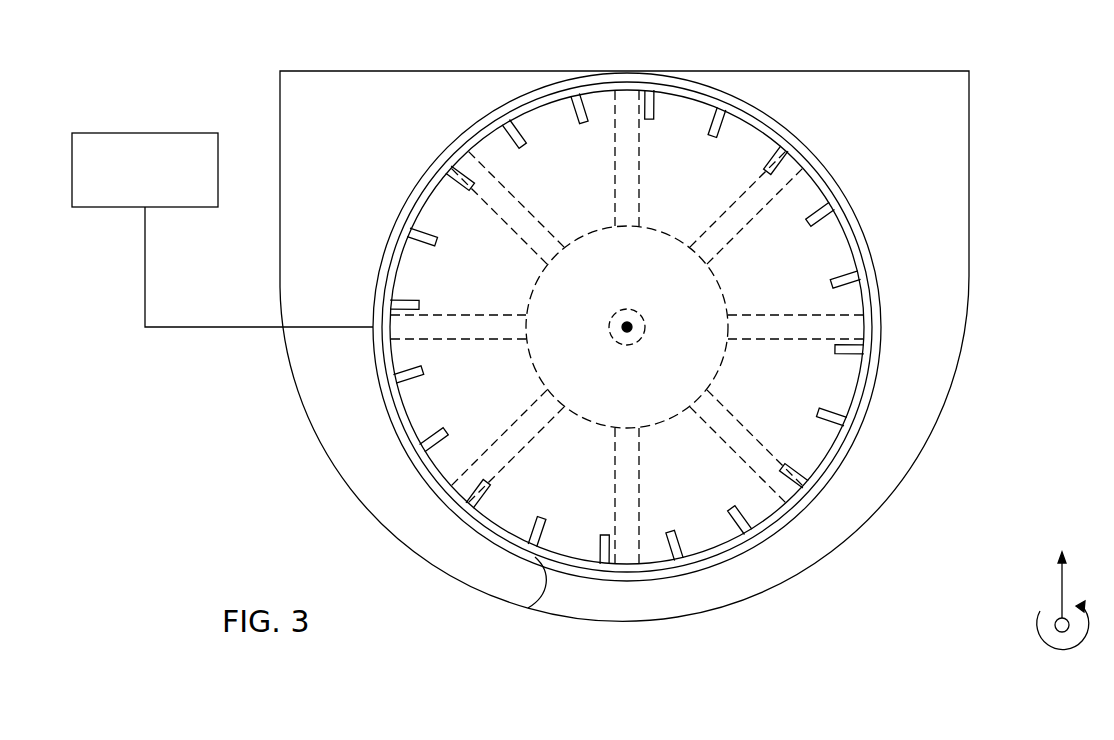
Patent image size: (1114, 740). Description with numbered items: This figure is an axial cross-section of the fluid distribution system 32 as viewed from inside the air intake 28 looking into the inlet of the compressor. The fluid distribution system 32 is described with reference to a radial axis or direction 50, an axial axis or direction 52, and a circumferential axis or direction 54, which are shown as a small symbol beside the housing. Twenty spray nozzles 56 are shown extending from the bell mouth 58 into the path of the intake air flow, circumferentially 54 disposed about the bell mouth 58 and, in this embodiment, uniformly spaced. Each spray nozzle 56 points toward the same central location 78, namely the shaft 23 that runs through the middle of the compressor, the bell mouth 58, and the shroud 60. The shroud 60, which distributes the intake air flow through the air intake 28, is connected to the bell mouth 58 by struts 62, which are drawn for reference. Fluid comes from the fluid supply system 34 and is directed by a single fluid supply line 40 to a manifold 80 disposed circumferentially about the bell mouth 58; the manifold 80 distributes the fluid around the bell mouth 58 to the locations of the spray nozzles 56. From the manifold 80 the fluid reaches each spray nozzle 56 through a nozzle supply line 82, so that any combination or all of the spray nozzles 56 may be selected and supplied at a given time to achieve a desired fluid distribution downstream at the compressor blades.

The shaft 23 is at (627, 344).
The air intake 28 is at (868, 71).
The fluid distribution system 32 is at (1022, 104).
The fluid supply system 34 is at (145, 133).
The fluid supply line 40 is at (210, 327).
The radial axis or direction 50 is at (1063, 578).
The axial axis or direction 52 is at (1058, 617).
The circumferential axis or direction 54 is at (1042, 647).
The spray nozzles 56 is at (718, 121).
The bell mouth 58 is at (815, 184).
The shroud 60 is at (721, 368).
The struts 62 is at (640, 158).
The central location 78 is at (623, 322).
The manifold 80 is at (463, 132).
The nozzle supply lines 82 is at (528, 608).